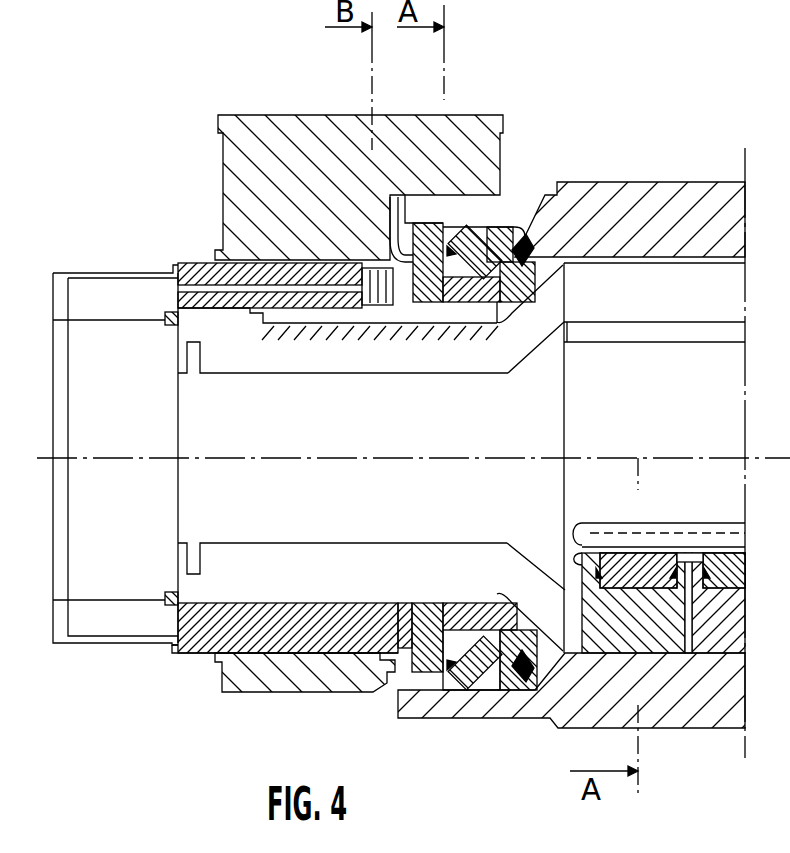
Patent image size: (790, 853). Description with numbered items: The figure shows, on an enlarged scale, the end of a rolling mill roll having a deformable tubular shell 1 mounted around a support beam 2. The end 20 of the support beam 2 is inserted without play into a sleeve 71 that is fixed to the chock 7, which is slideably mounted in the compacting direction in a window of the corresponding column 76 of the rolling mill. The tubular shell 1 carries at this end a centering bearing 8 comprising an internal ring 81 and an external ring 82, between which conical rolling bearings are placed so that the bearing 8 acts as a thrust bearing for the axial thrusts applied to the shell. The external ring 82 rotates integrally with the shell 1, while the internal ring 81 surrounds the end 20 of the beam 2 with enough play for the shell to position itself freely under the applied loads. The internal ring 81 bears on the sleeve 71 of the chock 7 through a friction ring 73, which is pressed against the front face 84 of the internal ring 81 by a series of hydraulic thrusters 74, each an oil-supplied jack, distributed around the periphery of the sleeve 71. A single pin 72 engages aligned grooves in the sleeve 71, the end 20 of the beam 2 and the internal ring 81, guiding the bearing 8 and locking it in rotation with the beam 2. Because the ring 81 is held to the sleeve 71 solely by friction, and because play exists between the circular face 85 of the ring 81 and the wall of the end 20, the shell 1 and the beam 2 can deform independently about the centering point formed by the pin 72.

The tubular shell 1 is at (692, 205).
The support beam 2 is at (703, 292).
The chock 7 is at (358, 147).
The centering bearing 8 is at (503, 222).
The end of the support beam 20 is at (186, 264).
The sleeve 71 is at (218, 350).
The pin 72 is at (472, 316).
The friction ring 73 is at (376, 268).
The hydraulic thrusters 74 is at (363, 265).
The column 76 is at (560, 198).
The internal ring 81 is at (426, 225).
The external ring 82 is at (520, 232).
The front face 84 is at (392, 197).
The circular face 85 is at (438, 636).